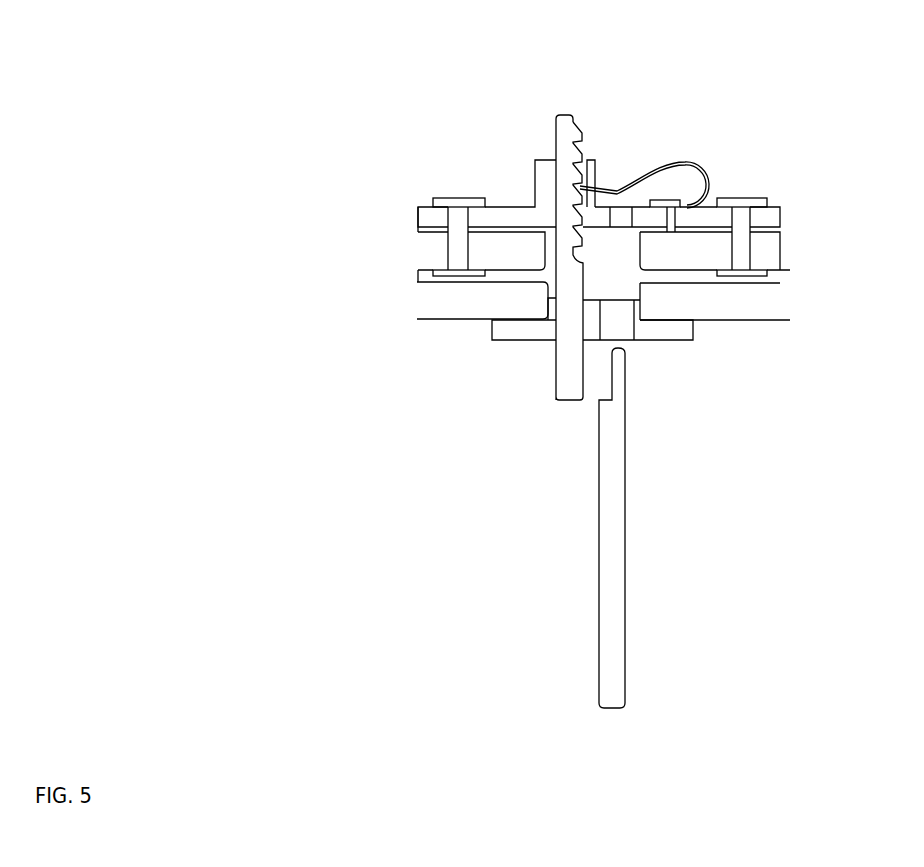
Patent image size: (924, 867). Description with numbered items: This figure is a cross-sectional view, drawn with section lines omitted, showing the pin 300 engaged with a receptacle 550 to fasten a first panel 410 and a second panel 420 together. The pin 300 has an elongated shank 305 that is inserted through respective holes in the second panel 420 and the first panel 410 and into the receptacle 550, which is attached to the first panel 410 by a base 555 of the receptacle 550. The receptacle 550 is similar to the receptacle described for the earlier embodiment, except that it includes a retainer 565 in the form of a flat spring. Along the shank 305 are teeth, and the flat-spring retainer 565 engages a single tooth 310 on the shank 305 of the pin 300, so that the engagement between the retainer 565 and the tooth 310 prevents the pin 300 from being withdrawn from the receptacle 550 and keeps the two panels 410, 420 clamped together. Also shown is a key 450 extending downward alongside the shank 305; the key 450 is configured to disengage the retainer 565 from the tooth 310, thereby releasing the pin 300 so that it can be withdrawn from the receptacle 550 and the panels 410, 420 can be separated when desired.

The pin 300 is at (538, 412).
The shank 305 is at (554, 137).
The tooth 310 is at (583, 162).
The first panel 410 is at (425, 270).
The second panel 420 is at (433, 320).
The key 450 is at (625, 565).
The receptacle 550 is at (488, 128).
The top plate 555 is at (773, 207).
The retainer 565 is at (693, 158).